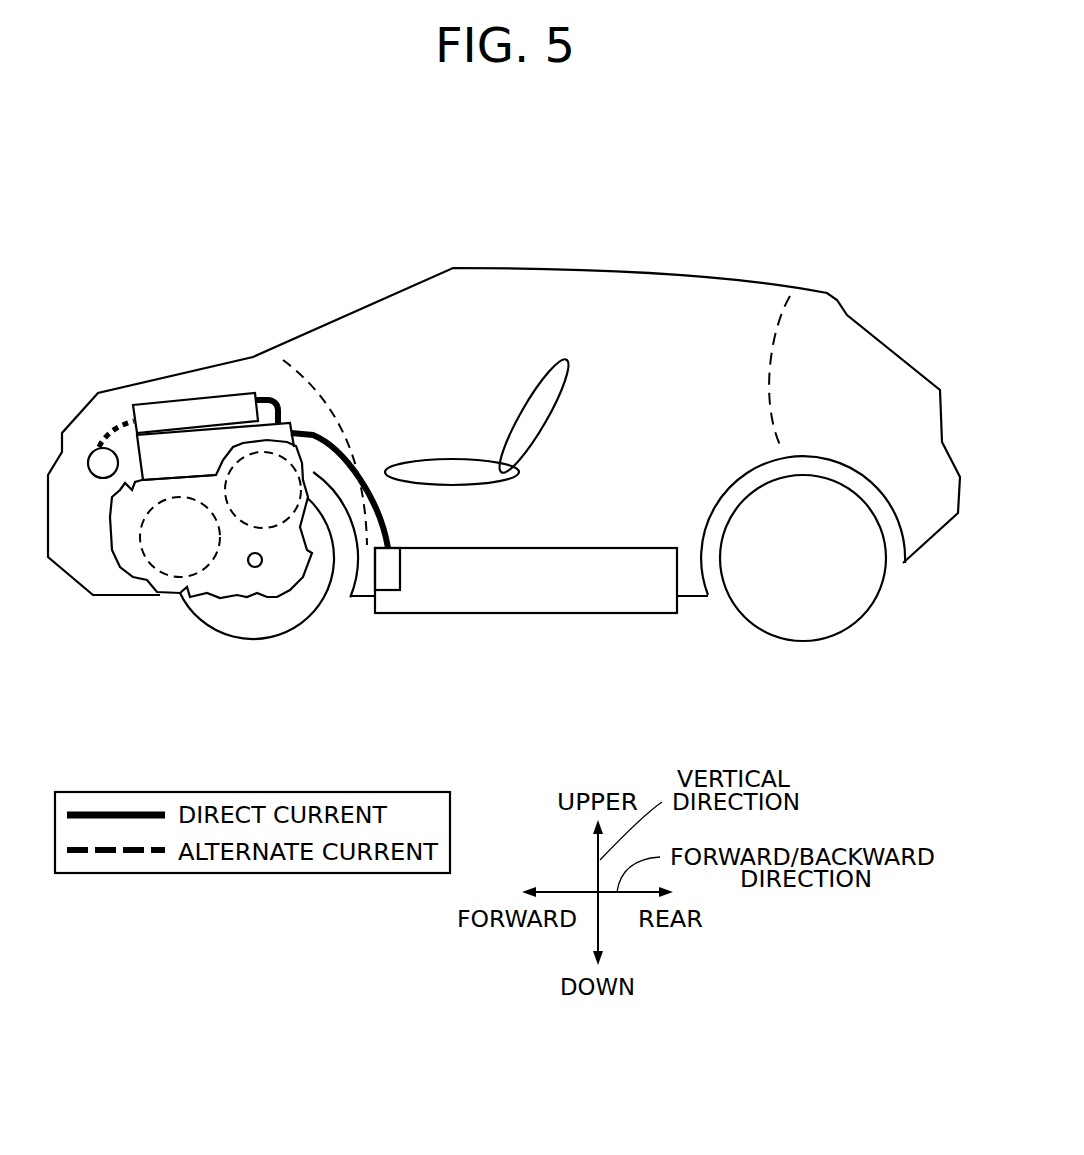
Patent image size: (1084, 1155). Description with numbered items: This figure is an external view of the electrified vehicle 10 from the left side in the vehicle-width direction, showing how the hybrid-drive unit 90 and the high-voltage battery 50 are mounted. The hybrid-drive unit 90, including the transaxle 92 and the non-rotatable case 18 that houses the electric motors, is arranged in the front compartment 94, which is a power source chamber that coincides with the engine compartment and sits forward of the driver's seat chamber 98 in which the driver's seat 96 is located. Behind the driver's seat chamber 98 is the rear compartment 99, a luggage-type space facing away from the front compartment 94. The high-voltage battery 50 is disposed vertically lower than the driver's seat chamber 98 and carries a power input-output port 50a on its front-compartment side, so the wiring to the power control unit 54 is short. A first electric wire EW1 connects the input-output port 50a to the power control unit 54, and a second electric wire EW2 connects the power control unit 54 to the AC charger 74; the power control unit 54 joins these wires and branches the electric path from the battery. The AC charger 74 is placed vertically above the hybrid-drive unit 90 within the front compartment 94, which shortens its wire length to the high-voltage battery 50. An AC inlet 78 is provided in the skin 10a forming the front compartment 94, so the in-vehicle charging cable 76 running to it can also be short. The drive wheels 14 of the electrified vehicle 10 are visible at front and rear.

The electrified vehicle 10 is at (533, 209).
The skin 10a is at (83, 514).
The drive wheels 14 is at (225, 622).
The non-rotatable case 18 is at (257, 606).
The high-voltage battery 50 is at (530, 595).
The power input-output port 50a is at (387, 572).
The power control unit 54 is at (207, 443).
The AC charger 74 is at (175, 410).
The in-vehicle charging cable 76 is at (112, 426).
The AC inlet 78 is at (95, 463).
The hybrid-drive unit 90 is at (95, 543).
The transaxle 92 is at (230, 578).
The front compartment 94 is at (90, 508).
The driver's seat 96 is at (528, 423).
The driver's seat chamber 98 is at (638, 417).
The rear compartment 99 is at (836, 394).
The first electric wire EW1 is at (312, 437).
The second electric wire EW2 is at (277, 403).